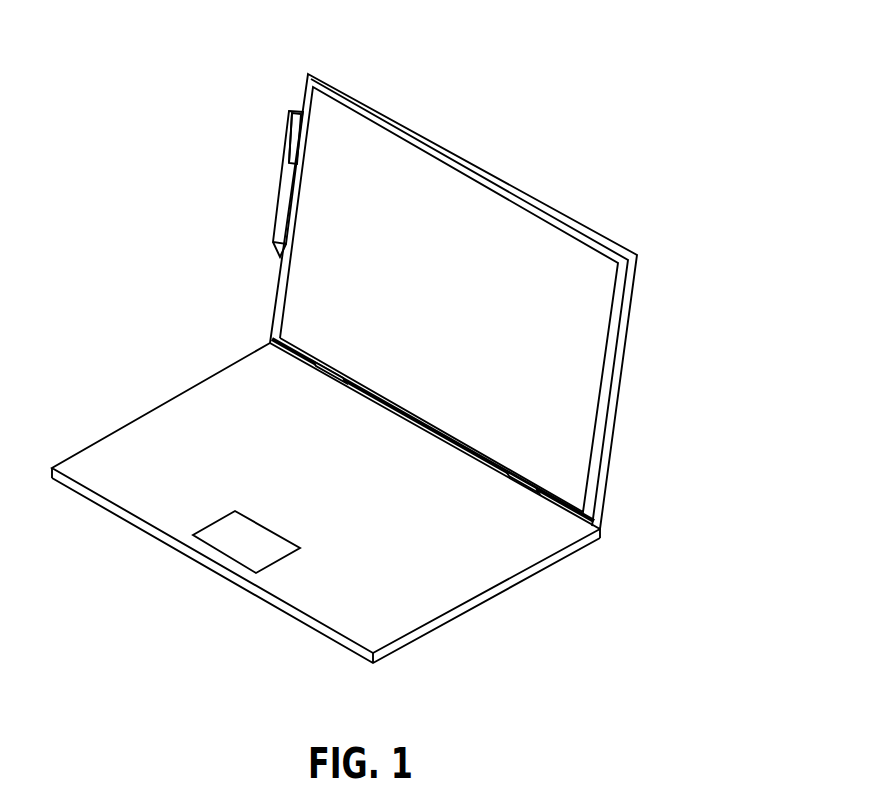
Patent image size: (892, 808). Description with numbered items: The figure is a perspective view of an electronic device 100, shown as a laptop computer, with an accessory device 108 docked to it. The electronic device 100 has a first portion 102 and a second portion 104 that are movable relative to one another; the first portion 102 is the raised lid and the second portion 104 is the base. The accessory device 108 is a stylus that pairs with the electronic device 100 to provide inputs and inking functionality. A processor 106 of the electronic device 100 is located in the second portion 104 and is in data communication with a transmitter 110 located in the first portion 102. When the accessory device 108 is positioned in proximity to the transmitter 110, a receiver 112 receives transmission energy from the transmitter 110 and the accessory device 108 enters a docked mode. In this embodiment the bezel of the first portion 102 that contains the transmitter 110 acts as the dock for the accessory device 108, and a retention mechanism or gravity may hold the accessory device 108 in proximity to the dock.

The electronic device 100 is at (497, 128).
The first portion 102 is at (630, 311).
The second portion 104 is at (502, 594).
The processor 106 is at (413, 609).
The accessory device 108 is at (274, 232).
The transmitter 110 is at (305, 135).
The receiver 112 is at (288, 142).